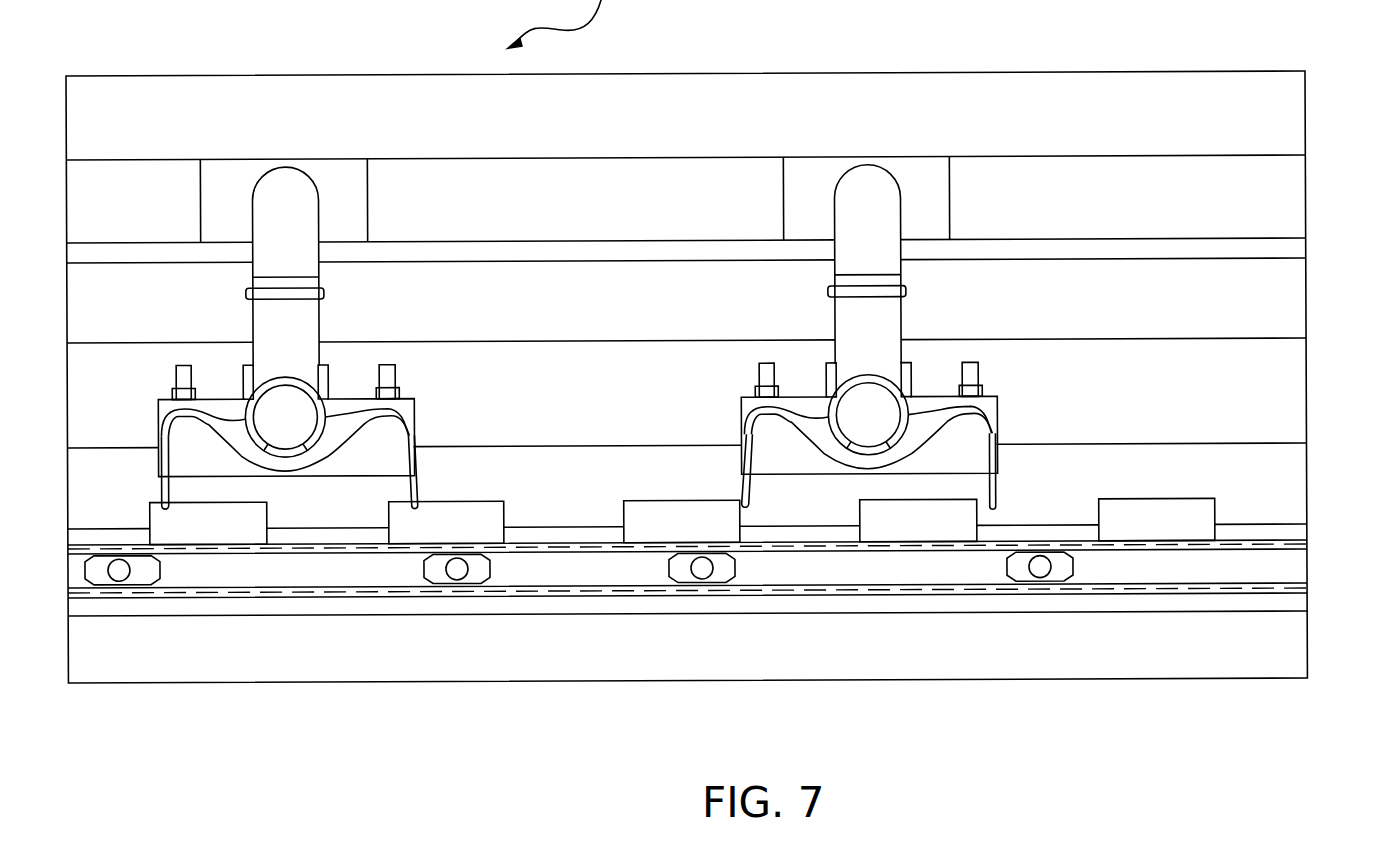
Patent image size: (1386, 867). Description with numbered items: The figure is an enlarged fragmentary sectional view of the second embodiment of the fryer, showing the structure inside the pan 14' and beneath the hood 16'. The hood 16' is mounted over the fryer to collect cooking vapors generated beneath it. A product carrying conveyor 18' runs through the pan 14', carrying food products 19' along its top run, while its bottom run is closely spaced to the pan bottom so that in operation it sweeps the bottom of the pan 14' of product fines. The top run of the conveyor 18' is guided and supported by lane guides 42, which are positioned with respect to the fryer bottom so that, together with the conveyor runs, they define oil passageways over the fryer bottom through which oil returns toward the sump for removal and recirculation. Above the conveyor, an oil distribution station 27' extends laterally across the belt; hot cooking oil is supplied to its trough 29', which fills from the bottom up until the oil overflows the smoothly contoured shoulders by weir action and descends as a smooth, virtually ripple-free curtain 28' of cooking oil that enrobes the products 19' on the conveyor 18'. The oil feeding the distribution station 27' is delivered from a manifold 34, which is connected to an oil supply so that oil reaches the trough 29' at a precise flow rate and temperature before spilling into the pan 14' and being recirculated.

The hood 16' is at (687, 343).
The manifold 34 is at (1237, 176).
The oil distribution station 27' is at (575, 266).
The trough 29' is at (631, 419).
The curtain of cooking oil 28' is at (633, 458).
The product 19' is at (687, 498).
The product carrying conveyor 18' is at (727, 534).
The lane guide 42 is at (388, 579).
The pan 14' is at (687, 677).